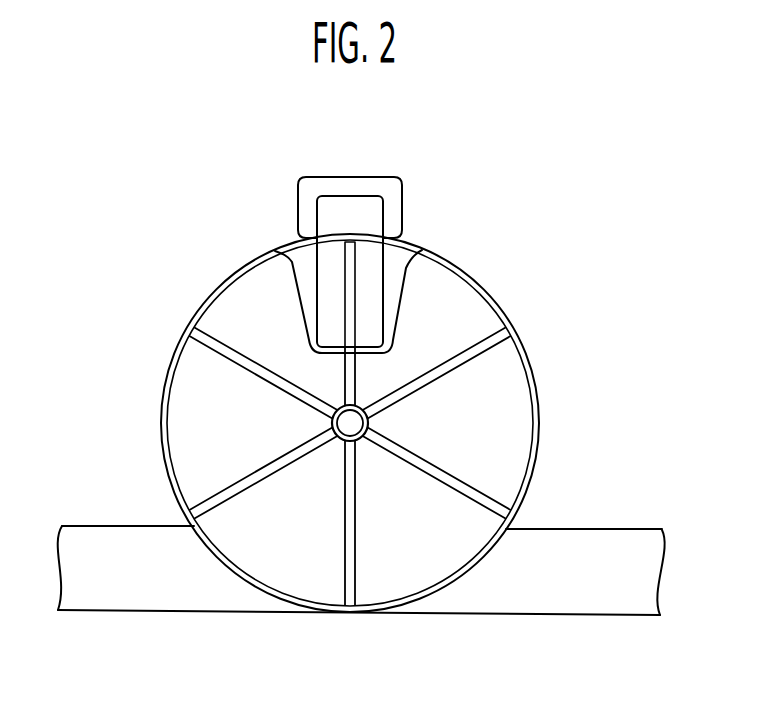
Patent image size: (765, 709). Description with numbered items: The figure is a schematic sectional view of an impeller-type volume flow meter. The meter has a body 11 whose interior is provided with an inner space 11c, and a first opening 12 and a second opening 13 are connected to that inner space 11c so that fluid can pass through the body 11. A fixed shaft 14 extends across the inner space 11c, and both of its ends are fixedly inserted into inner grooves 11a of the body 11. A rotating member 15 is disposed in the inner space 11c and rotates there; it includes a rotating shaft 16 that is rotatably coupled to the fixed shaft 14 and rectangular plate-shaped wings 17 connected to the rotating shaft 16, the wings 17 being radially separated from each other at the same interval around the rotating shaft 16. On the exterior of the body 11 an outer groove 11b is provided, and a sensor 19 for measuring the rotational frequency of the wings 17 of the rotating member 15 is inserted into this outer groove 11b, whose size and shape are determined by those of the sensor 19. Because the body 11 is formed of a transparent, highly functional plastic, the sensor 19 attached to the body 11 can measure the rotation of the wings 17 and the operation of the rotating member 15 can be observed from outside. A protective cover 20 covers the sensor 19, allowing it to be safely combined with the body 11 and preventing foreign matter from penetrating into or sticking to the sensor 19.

The body 11 is at (343, 407).
The inner grooves 11a is at (363, 405).
The outer groove 11b is at (395, 275).
The inner space 11c is at (220, 318).
The first opening 12 is at (361, 613).
The second opening 13 is at (588, 597).
The fixed shaft 14 is at (355, 430).
The rotating member 15 is at (274, 466).
The rotating shaft 16 is at (335, 418).
The wings 17 is at (202, 345).
The sensor 19 is at (377, 215).
The protective cover 20 is at (352, 185).